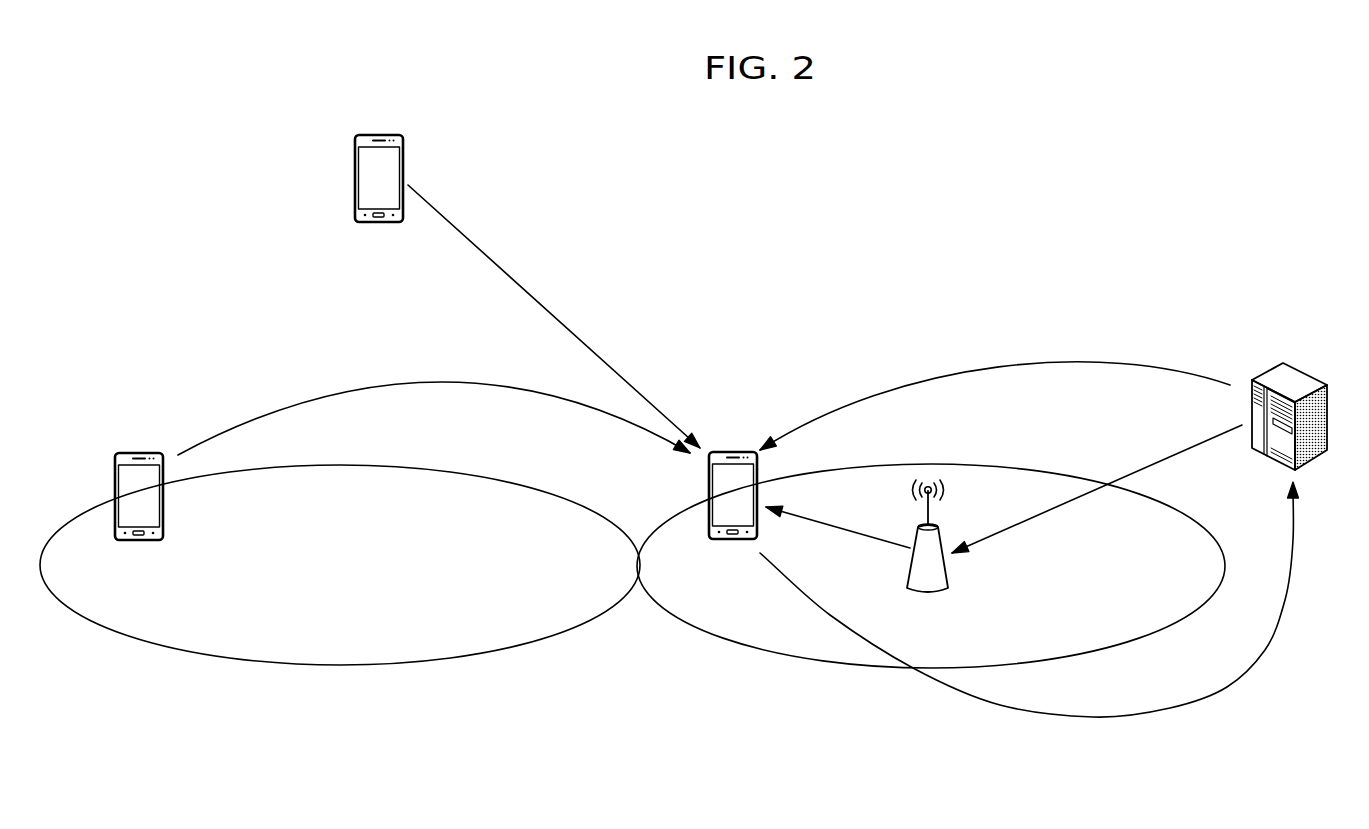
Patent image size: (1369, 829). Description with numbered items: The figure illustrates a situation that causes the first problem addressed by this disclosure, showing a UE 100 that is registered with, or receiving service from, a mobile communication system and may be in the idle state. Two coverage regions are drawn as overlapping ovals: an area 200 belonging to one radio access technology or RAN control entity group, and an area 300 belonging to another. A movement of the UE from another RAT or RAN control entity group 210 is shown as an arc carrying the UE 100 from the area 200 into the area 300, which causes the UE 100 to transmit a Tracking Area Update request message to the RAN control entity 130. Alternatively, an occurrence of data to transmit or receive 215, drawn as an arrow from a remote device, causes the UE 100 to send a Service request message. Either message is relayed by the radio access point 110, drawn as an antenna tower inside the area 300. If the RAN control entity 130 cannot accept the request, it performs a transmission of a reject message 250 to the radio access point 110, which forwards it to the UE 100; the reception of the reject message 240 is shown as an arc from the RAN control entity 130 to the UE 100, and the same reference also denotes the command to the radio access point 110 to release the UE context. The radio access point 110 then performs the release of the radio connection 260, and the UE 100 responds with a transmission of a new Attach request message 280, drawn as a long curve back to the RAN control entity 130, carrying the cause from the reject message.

The UE 100 is at (402, 173).
The radio access point 110 is at (932, 592).
The RAN control entity 130 is at (1305, 372).
The area 200 is at (508, 479).
The area 300 is at (992, 465).
The movement of the UE from another RAT or RAN control entity group 210 is at (437, 382).
The occurrence of data to transmit and/or receive 215 is at (559, 318).
The reception of reject message / UE context release command 240 is at (1063, 360).
The transmission of reject message 250 is at (1160, 460).
The release of radio connection 260 is at (840, 525).
The transmission of new Attach request message 280 is at (1150, 710).